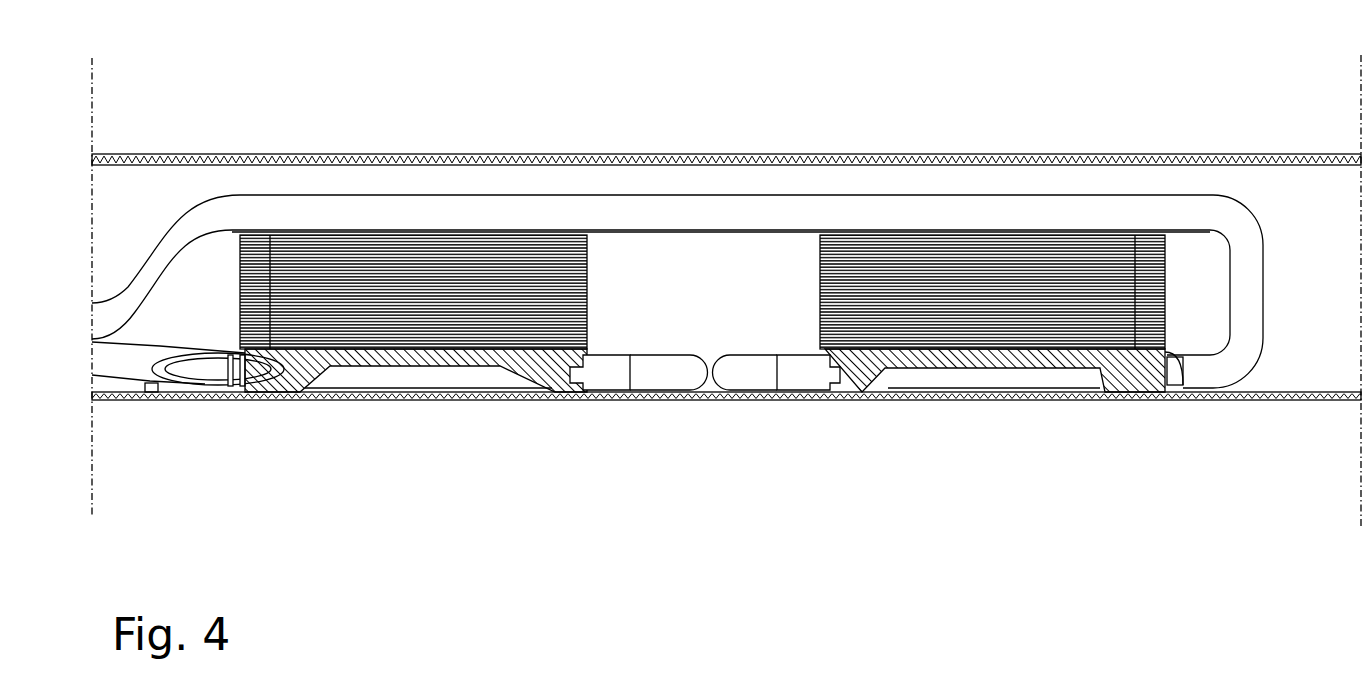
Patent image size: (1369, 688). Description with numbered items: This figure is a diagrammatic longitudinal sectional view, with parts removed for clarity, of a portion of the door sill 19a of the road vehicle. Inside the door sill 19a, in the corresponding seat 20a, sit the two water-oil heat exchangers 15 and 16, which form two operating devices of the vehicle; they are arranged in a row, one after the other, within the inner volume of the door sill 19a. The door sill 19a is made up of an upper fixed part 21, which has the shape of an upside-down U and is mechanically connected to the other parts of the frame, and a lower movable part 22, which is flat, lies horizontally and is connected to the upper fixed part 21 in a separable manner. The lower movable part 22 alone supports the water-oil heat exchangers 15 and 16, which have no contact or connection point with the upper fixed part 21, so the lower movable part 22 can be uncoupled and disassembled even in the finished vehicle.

The water-oil heat exchanger 15 is at (403, 323).
The water-oil heat exchanger 16 is at (935, 322).
The door sill 19a is at (1188, 560).
The seat 20a is at (359, 179).
The upper fixed part 21 is at (756, 119).
The lower movable part 22 is at (711, 442).